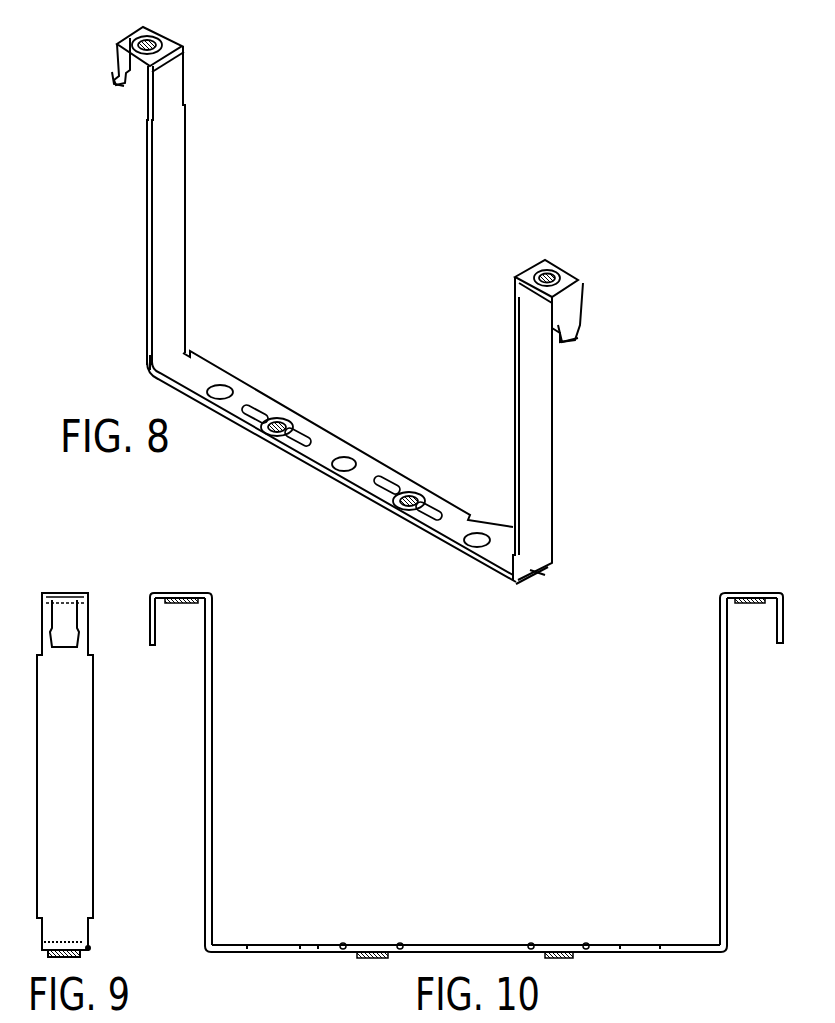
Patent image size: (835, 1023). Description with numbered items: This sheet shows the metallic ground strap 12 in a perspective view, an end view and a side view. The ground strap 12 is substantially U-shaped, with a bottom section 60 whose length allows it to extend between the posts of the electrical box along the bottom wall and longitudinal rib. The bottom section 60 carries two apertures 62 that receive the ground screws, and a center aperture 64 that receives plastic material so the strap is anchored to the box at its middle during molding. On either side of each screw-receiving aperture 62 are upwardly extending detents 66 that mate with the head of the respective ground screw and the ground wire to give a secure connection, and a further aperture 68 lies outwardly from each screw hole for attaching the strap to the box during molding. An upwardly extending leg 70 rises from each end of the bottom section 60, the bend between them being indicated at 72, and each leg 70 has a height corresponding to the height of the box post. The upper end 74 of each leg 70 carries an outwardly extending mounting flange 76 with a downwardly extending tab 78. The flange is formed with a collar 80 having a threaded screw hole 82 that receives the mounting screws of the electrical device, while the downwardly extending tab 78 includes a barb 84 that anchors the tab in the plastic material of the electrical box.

In FIG. 8, the ground strap 12 is at (185, 112).
In FIG. 9, the ground strap 12 is at (92, 781).
In FIG. 10, the ground strap 12 is at (728, 812).
In FIG. 8, the bottom section 60 is at (245, 402).
In FIG. 10, the bottom section 60 is at (330, 944).
In FIG. 8, the apertures 62 is at (279, 426).
In FIG. 10, the apertures 62 is at (372, 960).
In FIG. 8, the center aperture 64 is at (344, 460).
In FIG. 8, the detents 66 is at (296, 441).
In FIG. 10, the detents 66 is at (400, 942).
In FIG. 8, the aperture 68 is at (221, 390).
In FIG. 8, the leg 70 is at (180, 168).
In FIG. 9, the leg 70 is at (70, 805).
In FIG. 10, the leg 70 is at (214, 756).
In FIG. 8, the bend corners 72 is at (150, 364).
In FIG. 10, the bend corners 72 is at (212, 945).
In FIG. 10, the upper end 74 is at (213, 600).
In FIG. 8, the mounting flange 76 is at (160, 37).
In FIG. 9, the mounting flange 76 is at (48, 595).
In FIG. 10, the mounting flange 76 is at (195, 593).
In FIG. 8, the tab 78 is at (128, 82).
In FIG. 9, the tab 78 is at (66, 615).
In FIG. 10, the tab 78 is at (152, 635).
In FIG. 10, the collar 80 is at (185, 605).
In FIG. 8, the threaded screw hole 82 is at (148, 46).
In FIG. 8, the barb 84 is at (113, 78).
In FIG. 9, the barb 84 is at (78, 637).